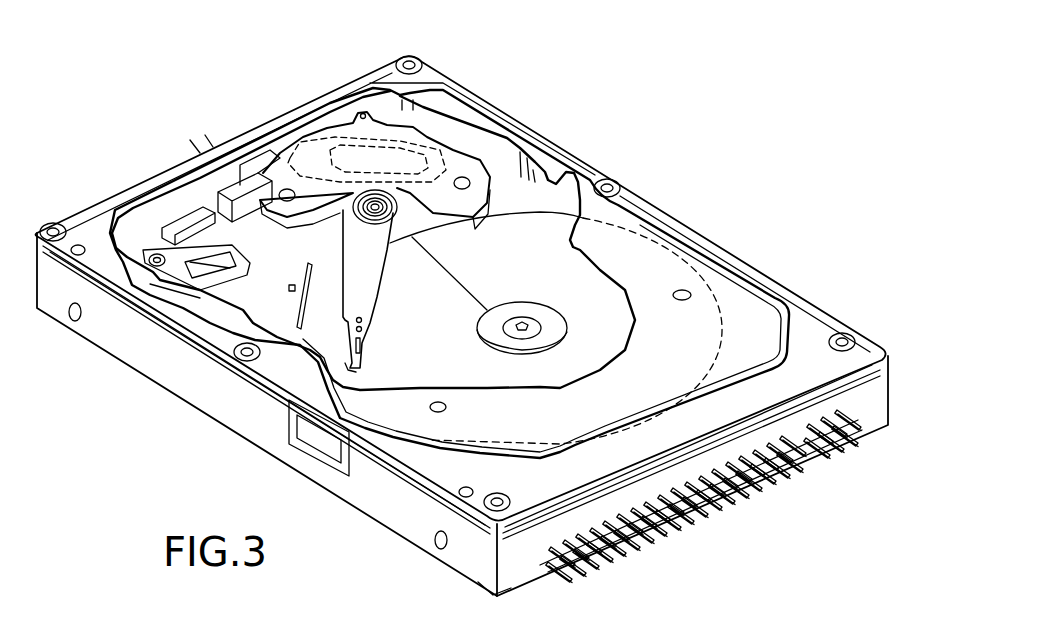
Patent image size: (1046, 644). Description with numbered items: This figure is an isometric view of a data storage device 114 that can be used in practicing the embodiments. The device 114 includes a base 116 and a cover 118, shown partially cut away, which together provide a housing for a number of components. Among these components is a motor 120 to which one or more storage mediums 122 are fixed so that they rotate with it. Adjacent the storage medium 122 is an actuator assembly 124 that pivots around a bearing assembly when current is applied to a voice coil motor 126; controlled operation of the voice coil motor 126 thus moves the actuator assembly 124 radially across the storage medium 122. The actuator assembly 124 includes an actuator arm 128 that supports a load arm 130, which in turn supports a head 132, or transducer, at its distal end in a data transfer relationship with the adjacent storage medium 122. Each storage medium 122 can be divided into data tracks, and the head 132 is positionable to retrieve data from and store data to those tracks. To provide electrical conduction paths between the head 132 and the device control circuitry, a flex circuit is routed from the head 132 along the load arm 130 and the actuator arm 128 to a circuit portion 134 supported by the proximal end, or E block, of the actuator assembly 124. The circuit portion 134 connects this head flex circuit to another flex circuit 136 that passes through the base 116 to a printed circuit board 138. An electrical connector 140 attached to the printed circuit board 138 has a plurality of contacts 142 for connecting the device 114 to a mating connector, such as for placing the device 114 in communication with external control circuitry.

The device 114 is at (567, 54).
The base 116 is at (207, 390).
The cover 118 is at (732, 285).
The motor 120 is at (542, 322).
The storage medium 122 is at (513, 273).
The actuator assembly 124 is at (388, 252).
The voice coil motor 126 is at (339, 131).
The actuator arm 128 is at (367, 303).
The load arm 130 is at (364, 337).
The head 132 is at (358, 368).
The circuit portion 134 is at (213, 195).
The flex circuit 136 is at (185, 230).
The printed circuit board 138 is at (487, 596).
The electrical connector 140 is at (791, 488).
The contacts 142 is at (752, 495).